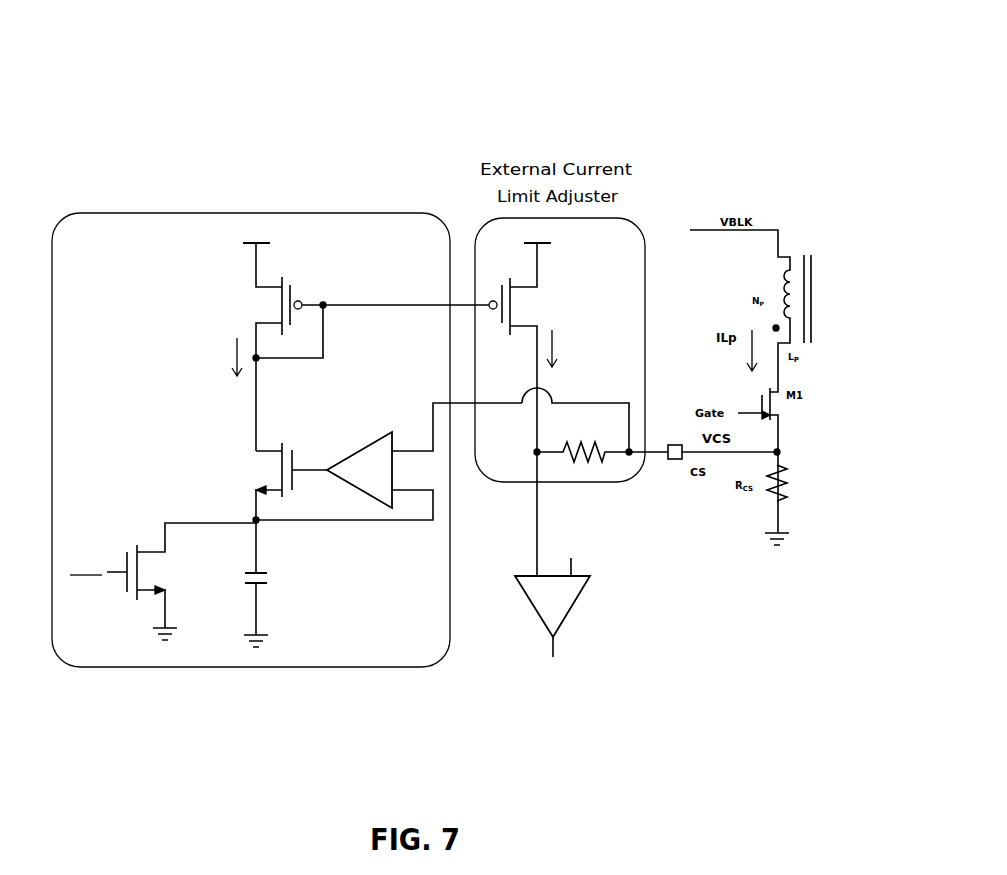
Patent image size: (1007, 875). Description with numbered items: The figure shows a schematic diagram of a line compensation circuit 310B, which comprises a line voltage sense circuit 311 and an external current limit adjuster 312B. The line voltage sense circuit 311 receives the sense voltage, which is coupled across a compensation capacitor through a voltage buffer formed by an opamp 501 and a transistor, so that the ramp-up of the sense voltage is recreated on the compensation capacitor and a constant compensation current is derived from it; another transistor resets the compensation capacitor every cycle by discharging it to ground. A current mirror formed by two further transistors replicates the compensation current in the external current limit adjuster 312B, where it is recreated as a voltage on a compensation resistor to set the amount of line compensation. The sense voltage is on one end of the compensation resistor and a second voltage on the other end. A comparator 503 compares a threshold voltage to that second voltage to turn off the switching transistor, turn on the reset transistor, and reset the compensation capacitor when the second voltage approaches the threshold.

The line compensation circuit 310B is at (253, 118).
The line voltage sense circuit 311 is at (150, 308).
The external current limit adjuster 312B is at (620, 278).
The opamp 501 is at (362, 444).
The comparator 503 is at (582, 596).